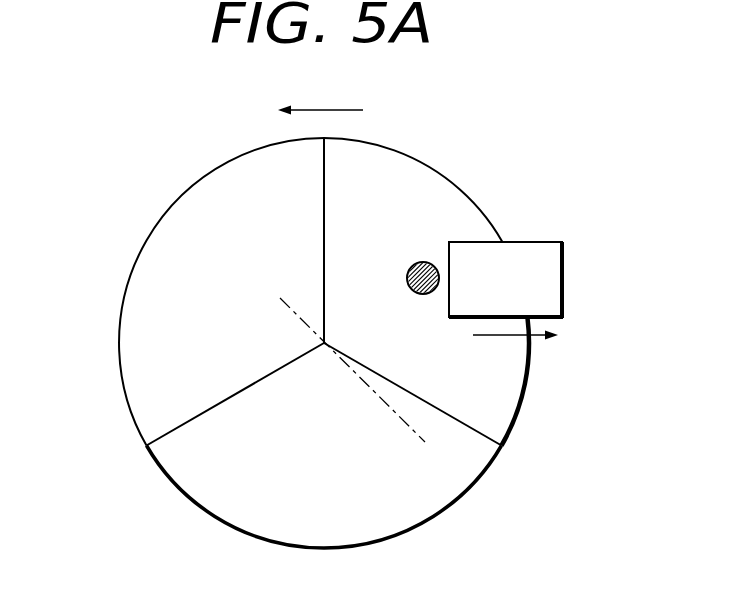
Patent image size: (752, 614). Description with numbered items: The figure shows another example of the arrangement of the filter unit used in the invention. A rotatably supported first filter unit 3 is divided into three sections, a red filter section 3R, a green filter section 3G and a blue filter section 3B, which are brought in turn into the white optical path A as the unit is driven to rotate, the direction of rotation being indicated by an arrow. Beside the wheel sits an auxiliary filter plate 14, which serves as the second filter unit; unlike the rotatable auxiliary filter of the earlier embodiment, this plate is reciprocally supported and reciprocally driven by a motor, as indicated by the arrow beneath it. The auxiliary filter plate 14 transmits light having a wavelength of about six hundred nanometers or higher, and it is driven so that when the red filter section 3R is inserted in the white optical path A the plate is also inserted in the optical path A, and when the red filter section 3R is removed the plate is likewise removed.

The first filter unit 3 is at (123, 389).
The blue filter section 3B is at (177, 225).
The red filter section 3R is at (403, 156).
The green filter section 3G is at (170, 455).
The auxiliary filter plate 14 is at (553, 280).
The white optical path A is at (430, 262).